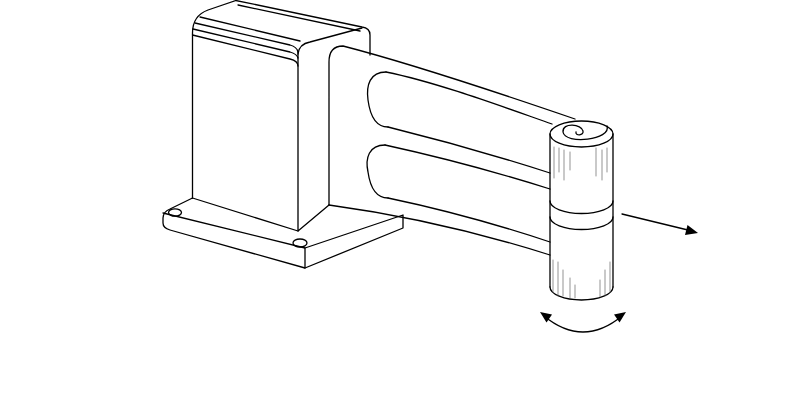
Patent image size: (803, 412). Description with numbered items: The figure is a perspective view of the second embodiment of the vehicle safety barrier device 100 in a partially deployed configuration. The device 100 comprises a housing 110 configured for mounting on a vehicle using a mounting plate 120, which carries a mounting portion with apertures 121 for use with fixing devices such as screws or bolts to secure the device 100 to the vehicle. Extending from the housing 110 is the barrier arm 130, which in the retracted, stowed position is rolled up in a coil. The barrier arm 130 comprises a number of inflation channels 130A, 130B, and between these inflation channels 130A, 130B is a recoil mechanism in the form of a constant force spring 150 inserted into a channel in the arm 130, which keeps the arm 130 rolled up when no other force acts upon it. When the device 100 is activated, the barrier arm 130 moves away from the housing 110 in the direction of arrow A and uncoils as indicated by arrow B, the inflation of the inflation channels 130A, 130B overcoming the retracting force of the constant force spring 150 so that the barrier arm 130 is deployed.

The vehicle safety barrier device 100 is at (146, 48).
The housing 110 is at (234, 117).
The mounting plate 120 is at (243, 223).
The apertures 121 is at (168, 212).
The barrier arm 130 is at (534, 90).
The inflation channel 130A is at (457, 195).
The inflation channel 130B is at (455, 118).
The constant force spring 150 is at (612, 215).